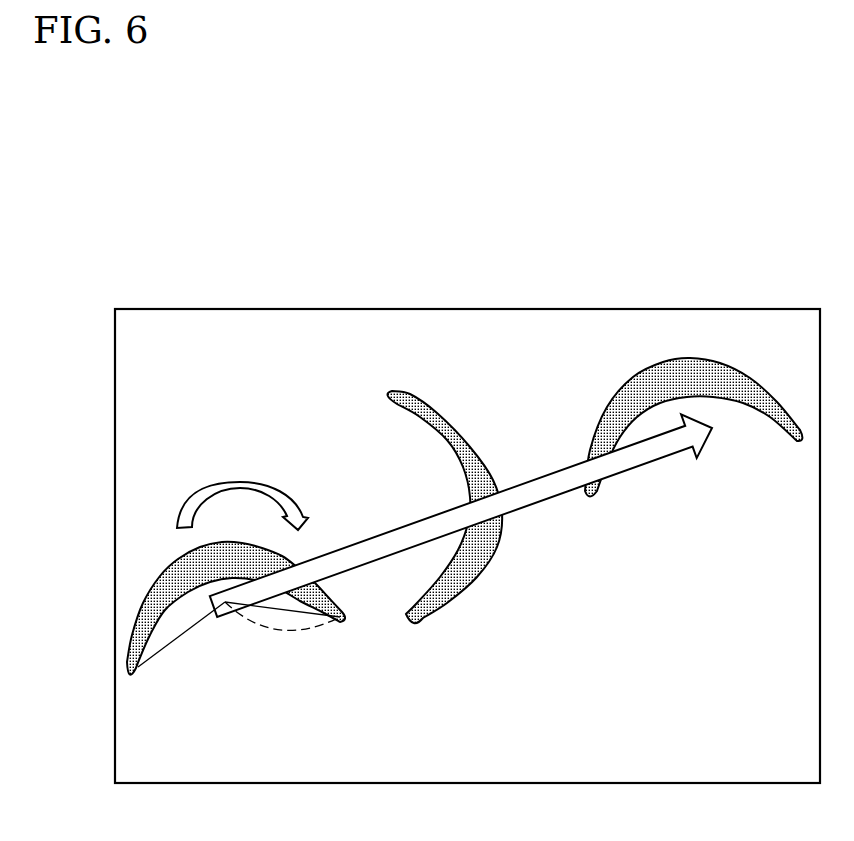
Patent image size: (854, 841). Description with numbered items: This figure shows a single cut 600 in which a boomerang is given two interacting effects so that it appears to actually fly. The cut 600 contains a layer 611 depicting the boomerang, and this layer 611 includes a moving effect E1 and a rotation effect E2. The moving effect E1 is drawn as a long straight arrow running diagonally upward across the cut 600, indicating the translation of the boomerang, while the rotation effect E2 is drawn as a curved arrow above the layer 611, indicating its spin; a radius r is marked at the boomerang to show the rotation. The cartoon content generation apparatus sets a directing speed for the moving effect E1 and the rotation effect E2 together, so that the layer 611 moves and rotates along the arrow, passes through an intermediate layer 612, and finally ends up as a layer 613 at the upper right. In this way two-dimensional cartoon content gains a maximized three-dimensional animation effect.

The cut 600 is at (757, 309).
The layer 611 is at (148, 643).
The layer 612 is at (473, 578).
The layer 613 is at (755, 412).
The moving effect E1 is at (392, 529).
The rotation effect E2 is at (202, 488).
The radius of rotation r is at (239, 634).